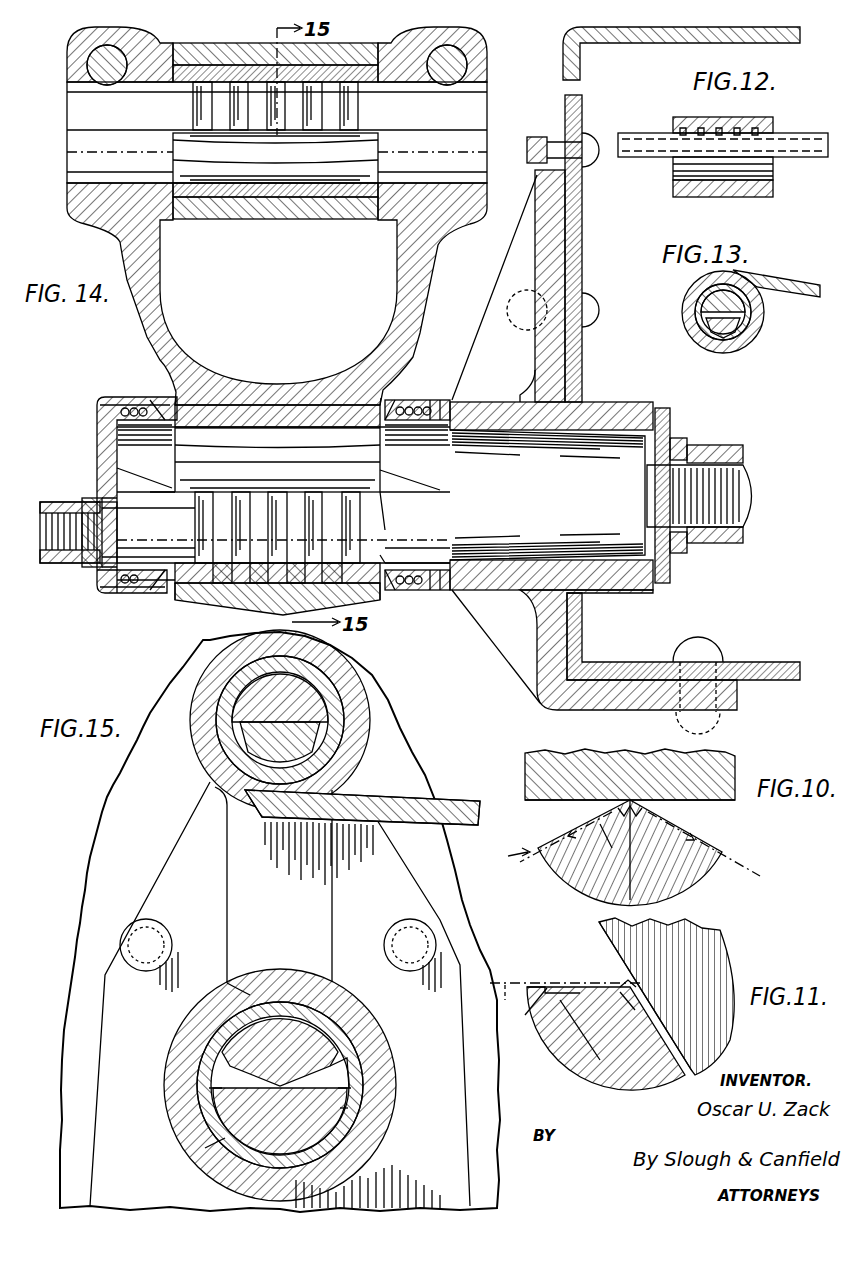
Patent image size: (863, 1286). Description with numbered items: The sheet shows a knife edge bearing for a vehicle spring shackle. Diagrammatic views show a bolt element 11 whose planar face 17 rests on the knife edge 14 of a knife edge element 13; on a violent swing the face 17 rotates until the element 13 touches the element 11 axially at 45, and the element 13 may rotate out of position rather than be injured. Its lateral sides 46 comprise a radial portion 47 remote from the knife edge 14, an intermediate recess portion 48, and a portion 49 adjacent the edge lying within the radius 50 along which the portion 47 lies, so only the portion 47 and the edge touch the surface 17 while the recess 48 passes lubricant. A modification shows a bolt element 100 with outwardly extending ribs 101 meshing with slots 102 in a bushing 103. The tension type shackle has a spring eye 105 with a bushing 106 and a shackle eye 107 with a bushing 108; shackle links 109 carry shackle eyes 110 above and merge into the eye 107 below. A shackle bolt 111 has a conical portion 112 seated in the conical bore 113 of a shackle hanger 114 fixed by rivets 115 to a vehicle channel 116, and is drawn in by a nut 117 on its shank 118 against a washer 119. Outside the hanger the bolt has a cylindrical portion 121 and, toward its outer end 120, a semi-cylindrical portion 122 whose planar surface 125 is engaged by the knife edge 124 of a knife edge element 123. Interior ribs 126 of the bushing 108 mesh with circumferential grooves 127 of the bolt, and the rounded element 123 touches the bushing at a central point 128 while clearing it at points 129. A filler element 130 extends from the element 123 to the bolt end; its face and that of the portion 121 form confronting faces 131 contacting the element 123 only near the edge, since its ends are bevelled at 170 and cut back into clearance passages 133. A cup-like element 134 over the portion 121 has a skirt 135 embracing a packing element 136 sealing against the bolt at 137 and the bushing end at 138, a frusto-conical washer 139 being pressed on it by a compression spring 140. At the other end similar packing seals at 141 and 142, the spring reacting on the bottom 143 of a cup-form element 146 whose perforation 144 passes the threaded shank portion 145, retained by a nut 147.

In FIG. 10, the bolt element 11 is at (728, 770).
In FIG. 11, the bolt element 11 is at (733, 960).
In FIG. 12, the knife edge element 13 is at (758, 197).
In FIG. 13, the knife edge element 13 is at (708, 345).
In FIG. 10, the knife edge element 13 is at (688, 880).
In FIG. 11, the knife edge element 13 is at (620, 1087).
In FIG. 10, the knife edge 14 is at (640, 850).
In FIG. 11, the knife edge 14 is at (583, 1030).
In FIG. 10, the planar face 17 is at (718, 801).
In FIG. 11, the planar face 17 is at (606, 932).
In FIG. 11, the contact point 45 is at (521, 1011).
In FIG. 10, the lateral sides 46 is at (600, 846).
In FIG. 11, the lateral sides 46 is at (554, 1003).
In FIG. 10, the radial portion 47 is at (556, 840).
In FIG. 11, the radial portion 47 is at (540, 985).
In FIG. 10, the intermediate recess portion 48 is at (590, 824).
In FIG. 11, the intermediate recess portion 48 is at (572, 985).
In FIG. 10, the portion adjacent knife edge 49 is at (623, 823).
In FIG. 11, the portion adjacent knife edge 49 is at (625, 1017).
In FIG. 10, the radius 50 is at (504, 857).
In FIG. 11, the radius 50 is at (505, 980).
In FIG. 12, the bolt element 100 is at (790, 135).
In FIG. 13, the bolt element 100 is at (752, 280).
In FIG. 12, the ribs 101 is at (742, 118).
In FIG. 13, the ribs 101 is at (700, 292).
In FIG. 12, the slots 102 is at (705, 118).
In FIG. 13, the slots 102 is at (752, 318).
In FIG. 12, the bushing 103 is at (700, 197).
In FIG. 13, the bushing 103 is at (743, 343).
In FIG. 14, the spring eye 105 is at (215, 43).
In FIG. 15, the spring eye 105 is at (195, 740).
In FIG. 14, the bushing 106 is at (243, 219).
In FIG. 15, the bushing 106 is at (365, 737).
In FIG. 14, the shackle eye 107 is at (381, 605).
In FIG. 15, the shackle eye 107 is at (385, 1140).
In FIG. 14, the bushing 108 is at (325, 415).
In FIG. 15, the bushing 108 is at (190, 1060).
In FIG. 14, the shackle links 109 is at (163, 290).
In FIG. 15, the shackle links 109 is at (298, 898).
In FIG. 14, the shackle eyes 110 is at (84, 202).
In FIG. 14, the shackle bolt 111 is at (388, 505).
In FIG. 15, the shackle bolt 111 is at (280, 1121).
In FIG. 14, the conical portion 112 is at (615, 425).
In FIG. 14, the conical bore 113 is at (592, 402).
In FIG. 14, the shackle hanger 114 is at (572, 241).
In FIG. 15, the shackle hanger 114 is at (175, 848).
In FIG. 14, the rivets 115 is at (592, 140).
In FIG. 15, the rivets 115 is at (163, 925).
In FIG. 14, the vehicle channel 116 is at (718, 27).
In FIG. 15, the vehicle channel 116 is at (75, 932).
In FIG. 14, the nut 117 is at (730, 445).
In FIG. 14, the shank 118 is at (755, 494).
In FIG. 14, the washer 119 is at (670, 423).
In FIG. 14, the outer end 120 is at (105, 582).
In FIG. 14, the cylindrical portion 121 is at (455, 512).
In FIG. 14, the semi-cylindrical portion 122 is at (117, 500).
In FIG. 15, the semi-cylindrical portion 122 is at (212, 1102).
In FIG. 14, the knife edge element 123 is at (265, 470).
In FIG. 15, the knife edge element 123 is at (246, 802).
In FIG. 14, the knife edge 124 is at (300, 478).
In FIG. 15, the knife edge 124 is at (283, 1082).
In FIG. 14, the planar surface 125 is at (200, 495).
In FIG. 15, the planar surface 125 is at (350, 1078).
In FIG. 14, the ribs 126 is at (286, 583).
In FIG. 15, the ribs 126 is at (205, 1148).
In FIG. 14, the grooves 127 is at (200, 540).
In FIG. 15, the grooves 127 is at (355, 1102).
In FIG. 14, the central point 128 is at (276, 418).
In FIG. 15, the central point 128 is at (286, 1003).
In FIG. 14, the clearance points 129 is at (213, 403).
In FIG. 15, the clearance points 129 is at (215, 999).
In FIG. 14, the filler element 130 is at (100, 445).
In FIG. 14, the confronting faces 131 is at (117, 468).
In FIG. 14, the clearance passages 133 is at (175, 445).
In FIG. 14, the cup-like element 134 is at (426, 404).
In FIG. 14, the skirt 135 is at (420, 400).
In FIG. 14, the packing element 136 is at (155, 400).
In FIG. 14, the inner sealing engagement 137 is at (393, 565).
In FIG. 14, the bushing end sealing engagement 138 is at (376, 556).
In FIG. 14, the frusto-conical washer 139 is at (130, 400).
In FIG. 14, the compression spring 140 is at (110, 400).
In FIG. 14, the bushing sealing engagement 141 is at (175, 600).
In FIG. 14, the filler sealing engagement 142 is at (200, 548).
In FIG. 14, the cup bottom 143 is at (100, 408).
In FIG. 14, the perforation 144 is at (88, 570).
In FIG. 14, the shank portion 145 is at (40, 510).
In FIG. 14, the cup-form element 146 is at (135, 598).
In FIG. 14, the nut 147 is at (60, 565).
In FIG. 14, the bevelled ends 170 is at (150, 493).